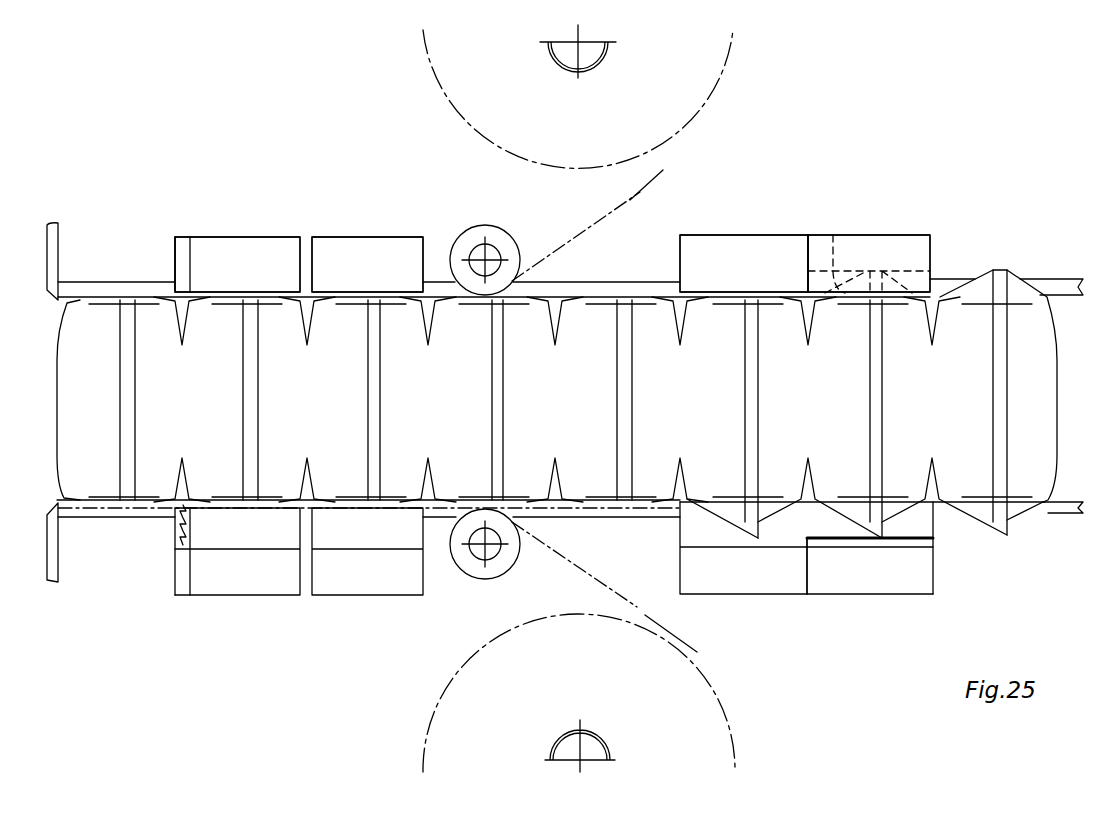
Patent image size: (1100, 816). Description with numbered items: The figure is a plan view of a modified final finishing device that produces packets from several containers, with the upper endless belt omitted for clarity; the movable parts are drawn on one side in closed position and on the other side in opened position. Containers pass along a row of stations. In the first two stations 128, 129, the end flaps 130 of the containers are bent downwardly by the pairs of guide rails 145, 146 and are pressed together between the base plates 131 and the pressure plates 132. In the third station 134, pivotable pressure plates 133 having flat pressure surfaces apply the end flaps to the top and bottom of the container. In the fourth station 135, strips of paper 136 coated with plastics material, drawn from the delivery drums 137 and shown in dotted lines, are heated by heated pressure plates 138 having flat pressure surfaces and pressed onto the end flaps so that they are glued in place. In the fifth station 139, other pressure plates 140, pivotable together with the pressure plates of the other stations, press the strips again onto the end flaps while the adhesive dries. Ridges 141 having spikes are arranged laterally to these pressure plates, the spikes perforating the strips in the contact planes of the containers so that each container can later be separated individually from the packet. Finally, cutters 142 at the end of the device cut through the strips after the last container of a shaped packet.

The first station 128 is at (1000, 232).
The second station 129 is at (875, 197).
The end flaps 130 is at (833, 246).
The base plates 131 is at (830, 528).
The pressure plates 132 is at (915, 234).
The pivotable pressure plates 133 is at (710, 234).
The third station 134 is at (749, 212).
The fourth station 135 is at (372, 198).
The strips of paper 136 is at (590, 222).
The delivery drums 137 is at (712, 90).
The heated pressure plates 138 is at (398, 246).
The fifth station 139 is at (238, 212).
The pressure plates 140 is at (273, 246).
The ridges having spikes 141 is at (183, 245).
The cutters 142 is at (58, 245).
The guide rail 145 is at (1065, 279).
The guide rail 146 is at (1069, 514).